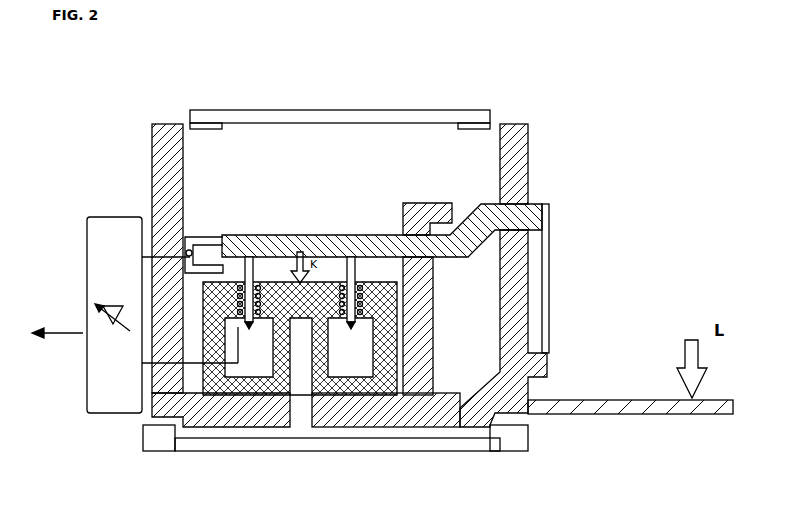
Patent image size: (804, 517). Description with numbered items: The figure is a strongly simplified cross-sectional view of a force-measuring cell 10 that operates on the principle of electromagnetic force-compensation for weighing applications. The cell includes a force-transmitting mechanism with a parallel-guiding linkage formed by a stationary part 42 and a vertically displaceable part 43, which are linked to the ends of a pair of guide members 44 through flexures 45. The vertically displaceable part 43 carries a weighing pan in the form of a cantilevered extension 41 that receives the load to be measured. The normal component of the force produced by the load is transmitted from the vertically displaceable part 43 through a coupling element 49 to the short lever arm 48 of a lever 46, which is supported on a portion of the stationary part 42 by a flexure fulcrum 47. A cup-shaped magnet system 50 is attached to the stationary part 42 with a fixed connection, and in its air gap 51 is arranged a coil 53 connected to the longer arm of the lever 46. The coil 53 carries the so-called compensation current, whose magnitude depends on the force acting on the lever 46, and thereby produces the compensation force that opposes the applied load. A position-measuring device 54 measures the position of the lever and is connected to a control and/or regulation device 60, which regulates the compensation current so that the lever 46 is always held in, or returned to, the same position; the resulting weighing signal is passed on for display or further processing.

The force-measuring cell 10 is at (650, 72).
The cantilevered extension 41 is at (610, 401).
The stationary part 42 is at (156, 162).
The vertically displaceable part 43 is at (530, 151).
The guide members 44 is at (308, 112).
The flexures 45 is at (187, 121).
The lever 46 is at (366, 236).
The flexure fulcrum 47 is at (447, 237).
The short lever arm 48 is at (520, 206).
The coupling element 49 is at (549, 268).
The magnet system 50 is at (354, 382).
The air gap 51 is at (354, 290).
The coil 53 is at (358, 304).
The position-measuring device 54 is at (183, 240).
The control and/or regulation device 60 is at (100, 407).